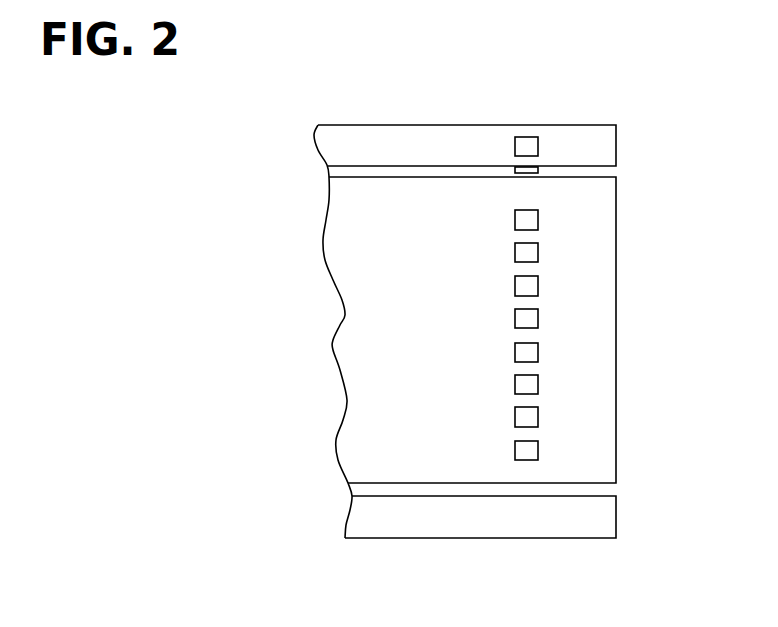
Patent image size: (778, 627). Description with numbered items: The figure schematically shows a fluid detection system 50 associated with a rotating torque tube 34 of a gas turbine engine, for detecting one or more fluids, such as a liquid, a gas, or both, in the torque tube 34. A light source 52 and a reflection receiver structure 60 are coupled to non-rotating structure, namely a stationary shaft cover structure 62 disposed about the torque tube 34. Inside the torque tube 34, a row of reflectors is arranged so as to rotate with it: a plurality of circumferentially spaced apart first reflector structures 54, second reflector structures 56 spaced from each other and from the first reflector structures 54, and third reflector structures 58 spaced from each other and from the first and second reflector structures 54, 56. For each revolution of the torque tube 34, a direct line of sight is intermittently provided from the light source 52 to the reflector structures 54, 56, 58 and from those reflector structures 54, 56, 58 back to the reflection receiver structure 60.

The fluid detection system 50 is at (578, 98).
The stationary shaft cover structure 62 is at (450, 147).
The torque tube 34 is at (602, 303).
The light source 52 is at (526, 139).
The reflection receiver structure 60 is at (540, 170).
The first reflector structures 54 is at (515, 220).
The third reflector structures 58 is at (515, 286).
The second reflector structures 56 is at (538, 250).